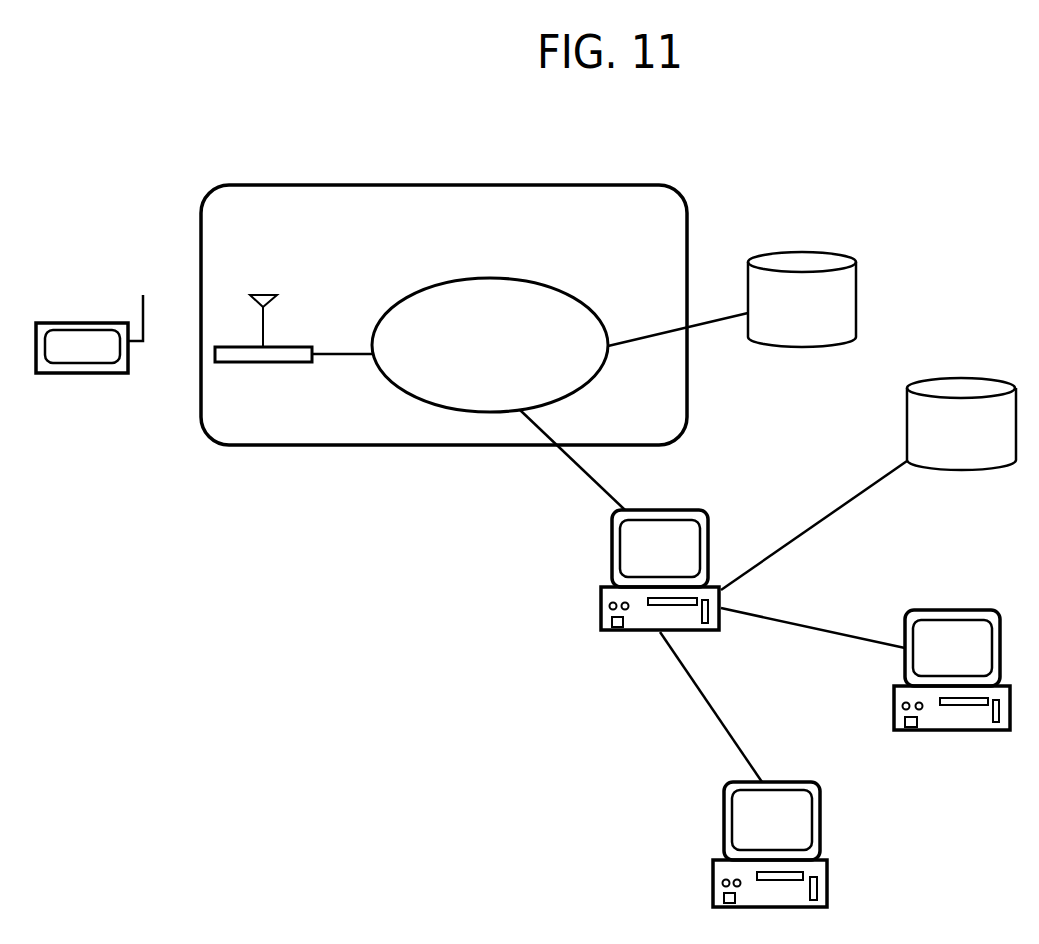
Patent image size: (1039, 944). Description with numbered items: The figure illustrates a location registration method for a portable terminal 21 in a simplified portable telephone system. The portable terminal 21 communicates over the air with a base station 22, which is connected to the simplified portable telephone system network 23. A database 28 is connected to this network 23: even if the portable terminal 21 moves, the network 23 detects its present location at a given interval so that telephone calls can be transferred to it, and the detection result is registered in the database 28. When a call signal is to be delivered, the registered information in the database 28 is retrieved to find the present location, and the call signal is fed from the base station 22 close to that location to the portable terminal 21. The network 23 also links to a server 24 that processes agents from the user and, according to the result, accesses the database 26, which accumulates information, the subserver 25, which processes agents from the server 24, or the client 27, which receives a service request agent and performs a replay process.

The portable terminal 21 is at (78, 375).
The base station 22 is at (243, 364).
The simplified portable telephone system network 23 is at (418, 290).
The server 24 is at (680, 508).
The subserver 25 is at (827, 883).
The database 26 is at (945, 383).
The client 27 is at (932, 732).
The database 28 is at (796, 260).